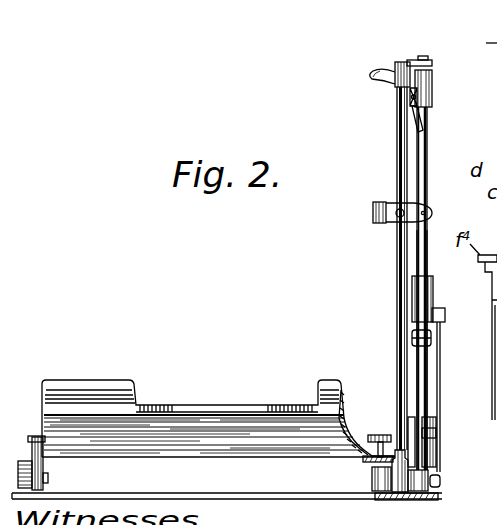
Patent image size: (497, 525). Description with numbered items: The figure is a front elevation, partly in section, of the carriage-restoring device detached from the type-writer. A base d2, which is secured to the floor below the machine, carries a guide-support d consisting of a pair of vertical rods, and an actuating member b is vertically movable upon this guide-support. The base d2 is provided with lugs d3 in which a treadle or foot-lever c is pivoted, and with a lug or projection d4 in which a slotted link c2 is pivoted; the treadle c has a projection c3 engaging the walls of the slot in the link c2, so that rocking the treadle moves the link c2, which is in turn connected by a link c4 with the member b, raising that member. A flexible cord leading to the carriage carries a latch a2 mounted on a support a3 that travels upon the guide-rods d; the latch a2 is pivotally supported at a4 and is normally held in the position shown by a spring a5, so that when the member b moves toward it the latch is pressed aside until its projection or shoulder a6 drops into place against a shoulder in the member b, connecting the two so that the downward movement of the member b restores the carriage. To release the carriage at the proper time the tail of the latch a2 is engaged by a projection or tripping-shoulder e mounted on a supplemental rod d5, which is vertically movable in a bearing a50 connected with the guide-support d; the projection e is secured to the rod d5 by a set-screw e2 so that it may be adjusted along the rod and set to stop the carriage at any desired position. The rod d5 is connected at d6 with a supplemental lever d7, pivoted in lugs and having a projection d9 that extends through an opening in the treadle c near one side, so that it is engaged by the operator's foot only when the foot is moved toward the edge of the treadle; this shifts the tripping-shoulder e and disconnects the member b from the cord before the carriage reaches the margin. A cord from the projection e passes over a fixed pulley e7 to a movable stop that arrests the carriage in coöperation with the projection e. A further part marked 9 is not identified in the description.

The treadle or foot-lever c is at (197, 414).
The base d2 is at (252, 493).
The lugs d3 is at (45, 483).
The supplemental rod d5 is at (383, 271).
The latch projection or shoulder a6 is at (429, 113).
The guide-support d is at (426, 254).
The bearing a50 is at (410, 52).
The support a3 is at (431, 95).
The pivotal support a4 is at (411, 98).
The latch a2 is at (410, 124).
The spring a5 is at (385, 73).
The projection or tripping-shoulder e is at (373, 211).
The set-screw e2 is at (398, 216).
The actuating member b is at (412, 289).
The fixed pulley e7 is at (413, 342).
The link c4 is at (438, 393).
The projection d9 is at (382, 428).
The connection d6 is at (388, 500).
The supplemental lever d7 is at (404, 500).
The slotted link c2 is at (431, 461).
The projection c3 is at (433, 444).
The lug or projection d4 is at (436, 433).
The base strip 9 is at (378, 494).